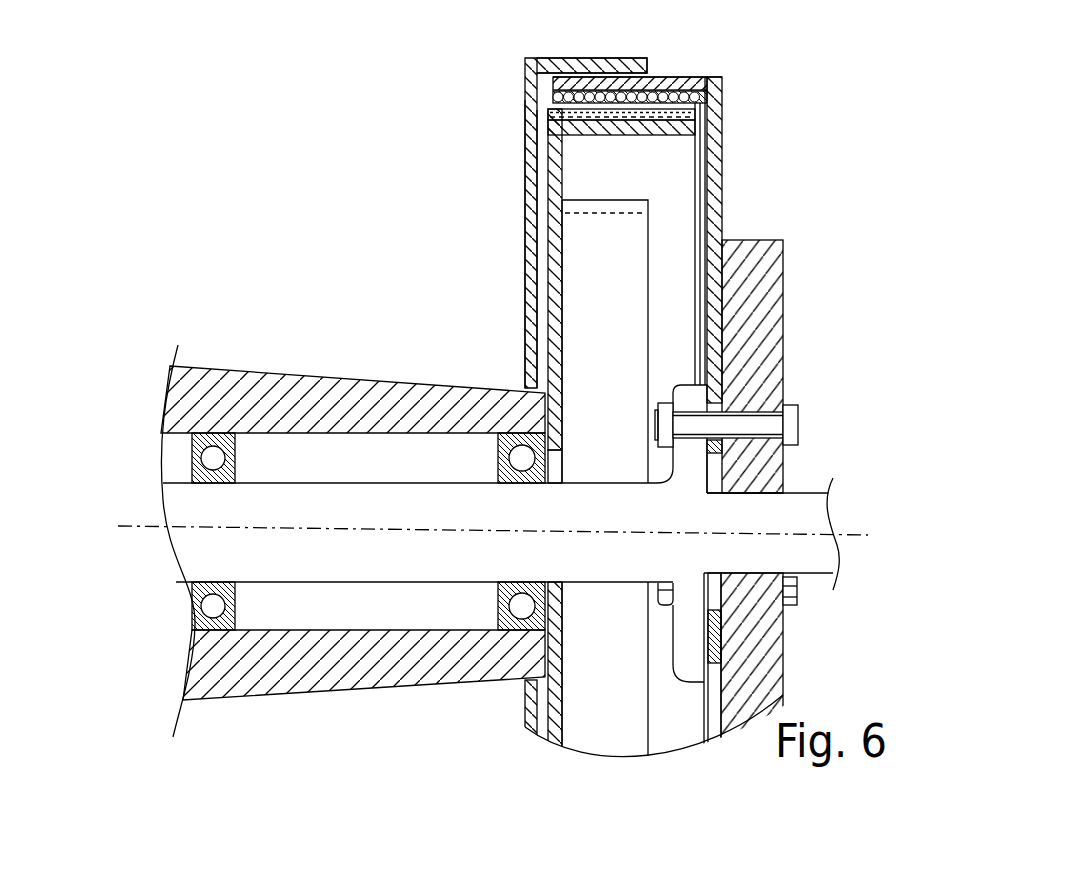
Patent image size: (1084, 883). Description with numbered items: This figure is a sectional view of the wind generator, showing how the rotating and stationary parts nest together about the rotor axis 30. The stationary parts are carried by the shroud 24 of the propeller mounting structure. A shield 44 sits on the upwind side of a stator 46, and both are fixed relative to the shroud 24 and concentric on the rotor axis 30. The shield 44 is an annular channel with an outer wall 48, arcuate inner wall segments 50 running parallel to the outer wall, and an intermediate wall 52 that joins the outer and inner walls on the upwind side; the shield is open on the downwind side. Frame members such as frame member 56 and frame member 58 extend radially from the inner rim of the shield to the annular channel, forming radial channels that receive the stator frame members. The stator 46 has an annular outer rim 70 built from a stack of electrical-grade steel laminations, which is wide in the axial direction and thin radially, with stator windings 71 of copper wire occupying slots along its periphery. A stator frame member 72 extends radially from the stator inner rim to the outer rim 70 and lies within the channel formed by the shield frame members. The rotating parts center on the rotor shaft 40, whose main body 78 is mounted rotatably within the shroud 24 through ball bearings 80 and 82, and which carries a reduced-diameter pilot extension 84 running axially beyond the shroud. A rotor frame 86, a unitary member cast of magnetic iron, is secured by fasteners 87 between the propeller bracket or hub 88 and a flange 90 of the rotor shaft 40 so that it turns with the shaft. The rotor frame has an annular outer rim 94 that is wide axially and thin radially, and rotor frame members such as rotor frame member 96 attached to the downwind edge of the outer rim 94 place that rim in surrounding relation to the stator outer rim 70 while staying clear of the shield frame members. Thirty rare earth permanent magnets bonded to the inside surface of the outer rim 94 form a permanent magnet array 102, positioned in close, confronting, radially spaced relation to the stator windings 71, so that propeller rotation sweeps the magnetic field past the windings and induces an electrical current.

The shroud 24 is at (275, 695).
The rotor axis 30 is at (860, 533).
The rotor shaft 40 is at (198, 552).
The shield 44 is at (527, 343).
The stator 46 is at (558, 240).
The outer wall 48 is at (585, 62).
The inner wall segments 50 is at (650, 207).
The intermediate wall 52 is at (527, 100).
The frame member 56 is at (532, 325).
The frame member 58 is at (597, 745).
The outer rim 70 is at (702, 130).
The stator windings 71 is at (667, 112).
The stator frame member 72 is at (566, 232).
The main body 78 is at (334, 575).
The ball bearing 80 is at (225, 480).
The ball bearing 82 is at (520, 582).
The pilot extension 84 is at (805, 566).
The rotor frame 86 is at (712, 637).
The fasteners 87 is at (800, 416).
The mounting block 88 is at (780, 470).
The flange 90 is at (692, 684).
The outer rim 94 is at (606, 82).
The rotor frame member 96 is at (706, 296).
The permanent magnet array 102 is at (663, 98).